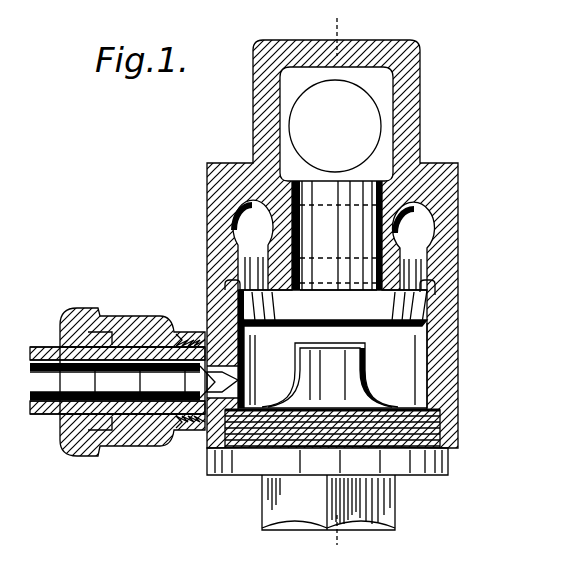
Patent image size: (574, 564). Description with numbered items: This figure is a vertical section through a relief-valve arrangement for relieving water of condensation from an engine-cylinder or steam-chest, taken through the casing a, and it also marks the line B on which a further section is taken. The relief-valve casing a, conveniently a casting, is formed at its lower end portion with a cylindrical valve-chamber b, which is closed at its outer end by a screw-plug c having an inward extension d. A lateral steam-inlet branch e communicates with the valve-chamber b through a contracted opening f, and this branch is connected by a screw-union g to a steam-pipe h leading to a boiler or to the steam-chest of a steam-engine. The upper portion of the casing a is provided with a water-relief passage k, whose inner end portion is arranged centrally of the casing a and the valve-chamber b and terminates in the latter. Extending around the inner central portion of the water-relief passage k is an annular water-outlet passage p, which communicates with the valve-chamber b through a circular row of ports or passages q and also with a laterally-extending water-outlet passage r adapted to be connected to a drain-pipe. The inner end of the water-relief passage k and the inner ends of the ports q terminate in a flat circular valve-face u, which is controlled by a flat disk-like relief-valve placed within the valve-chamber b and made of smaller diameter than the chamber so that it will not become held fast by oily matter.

The relief-valve casing a is at (445, 336).
The valve-chamber b is at (332, 365).
The screw-plug c is at (327, 470).
The inward extension d is at (330, 375).
The lateral steam-inlet branch e is at (115, 381).
The contracted opening f is at (225, 382).
The screw-union g is at (118, 316).
The steam-pipe h is at (117, 380).
The water-relief passage k is at (335, 185).
The annular water-outlet passage p is at (408, 249).
The ports or passages q is at (466, 268).
The laterally-extending water-outlet passage r is at (330, 303).
The flat circular valve-face u is at (378, 287).
The section line B B is at (347, 282).